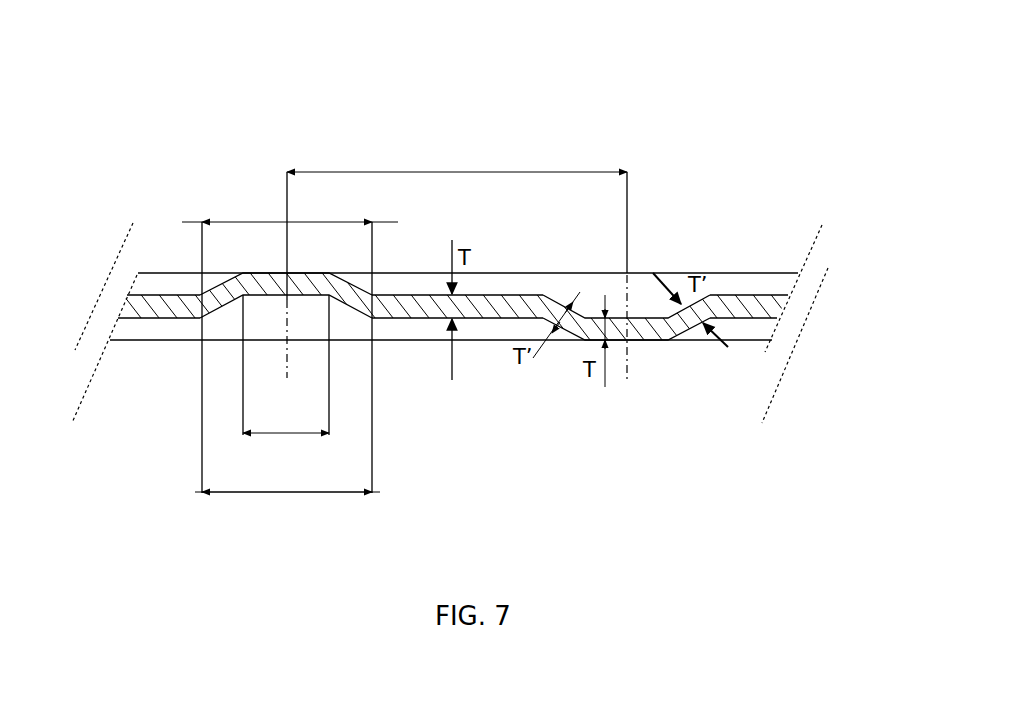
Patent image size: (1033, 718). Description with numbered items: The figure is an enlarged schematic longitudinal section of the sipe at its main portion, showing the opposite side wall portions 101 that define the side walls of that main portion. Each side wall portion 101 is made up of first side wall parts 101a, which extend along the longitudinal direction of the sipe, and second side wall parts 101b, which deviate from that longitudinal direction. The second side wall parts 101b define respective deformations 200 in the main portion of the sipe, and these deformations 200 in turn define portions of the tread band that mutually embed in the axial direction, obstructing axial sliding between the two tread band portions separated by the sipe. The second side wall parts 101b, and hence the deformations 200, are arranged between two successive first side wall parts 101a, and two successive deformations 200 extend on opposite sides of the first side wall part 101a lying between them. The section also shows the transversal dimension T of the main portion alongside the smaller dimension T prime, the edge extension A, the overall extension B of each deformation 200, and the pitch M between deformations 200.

The side wall portion 101 is at (423, 269).
The first side wall part 101a is at (460, 453).
The second side wall part 101b is at (300, 268).
The deformation 200 is at (262, 243).